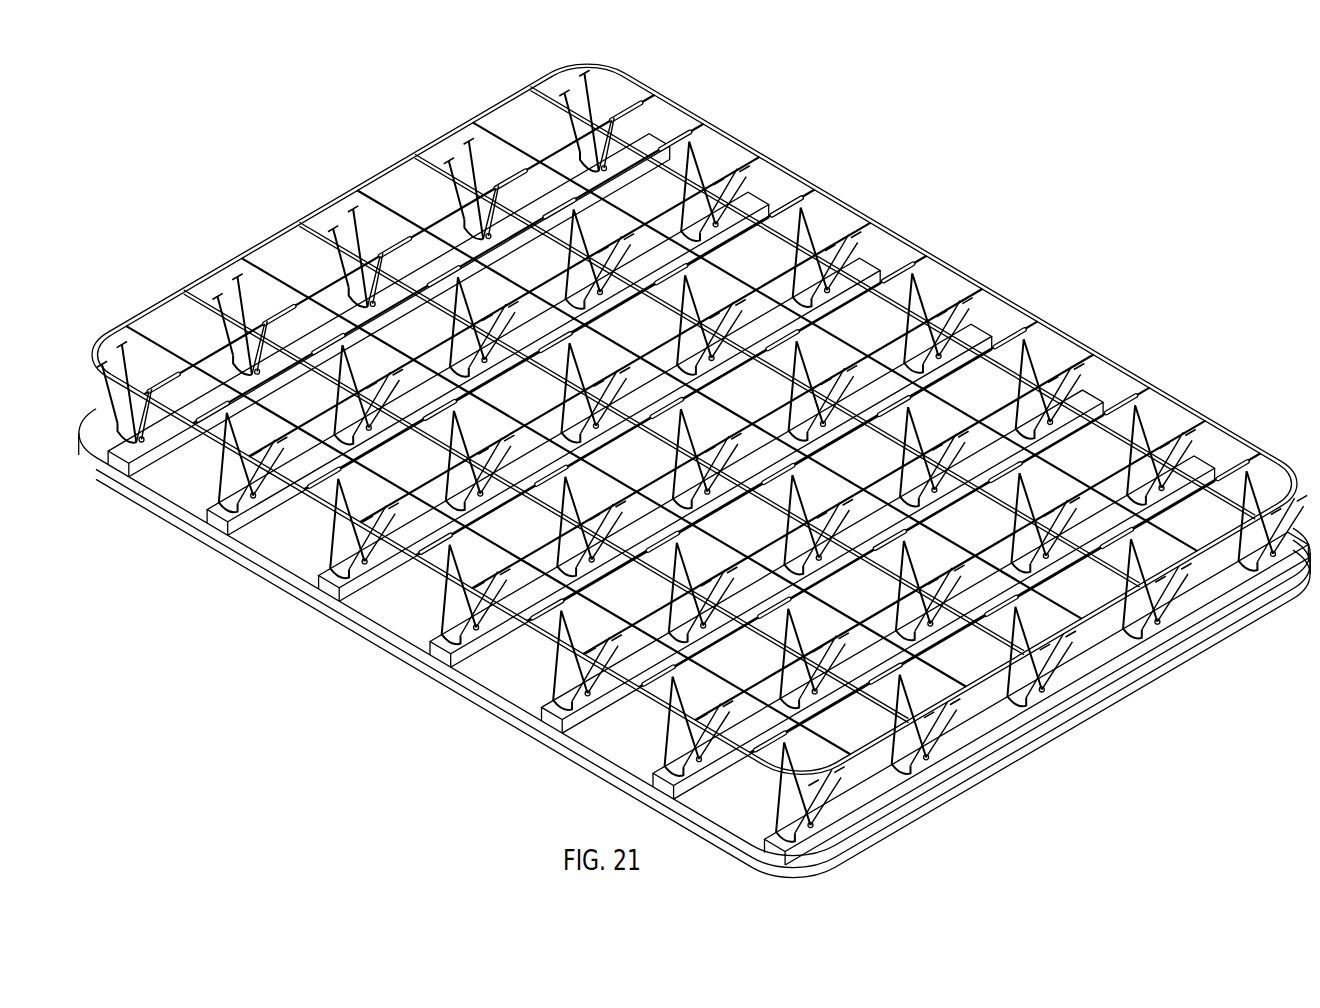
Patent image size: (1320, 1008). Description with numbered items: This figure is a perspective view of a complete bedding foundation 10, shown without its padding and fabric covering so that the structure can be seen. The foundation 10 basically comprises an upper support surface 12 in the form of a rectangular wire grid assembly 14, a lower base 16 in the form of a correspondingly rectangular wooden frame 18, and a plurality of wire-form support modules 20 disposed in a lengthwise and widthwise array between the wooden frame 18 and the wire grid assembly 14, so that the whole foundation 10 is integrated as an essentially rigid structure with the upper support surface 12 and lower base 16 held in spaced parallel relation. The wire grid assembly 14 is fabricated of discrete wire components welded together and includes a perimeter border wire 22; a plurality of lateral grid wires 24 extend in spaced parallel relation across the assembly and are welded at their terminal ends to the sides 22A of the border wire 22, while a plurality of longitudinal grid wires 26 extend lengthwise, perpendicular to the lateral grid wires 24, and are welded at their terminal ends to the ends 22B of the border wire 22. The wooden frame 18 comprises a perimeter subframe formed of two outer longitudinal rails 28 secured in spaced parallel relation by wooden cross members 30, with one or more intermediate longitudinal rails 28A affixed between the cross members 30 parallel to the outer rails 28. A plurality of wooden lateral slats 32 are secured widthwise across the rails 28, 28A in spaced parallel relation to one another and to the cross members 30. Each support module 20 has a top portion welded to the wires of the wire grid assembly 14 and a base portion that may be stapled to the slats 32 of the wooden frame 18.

The bedding foundation 10 is at (695, 462).
The upper support surface 12 is at (693, 405).
The wire grid assembly 14 is at (152, 312).
The lower base 16 is at (695, 511).
The wooden frame 18 is at (603, 760).
The support module 20 is at (768, 797).
The border wire 22 is at (693, 405).
The sides of the border wire 22A is at (748, 163).
The ends of the border wire 22B is at (386, 190).
The lateral grid wire 24 is at (867, 233).
The longitudinal grid wire 26 is at (975, 340).
The outer longitudinal rail 28 is at (1201, 513).
The intermediate longitudinal rail 28A is at (966, 665).
The cross member 30 is at (848, 860).
The lateral slat 32 is at (1084, 365).